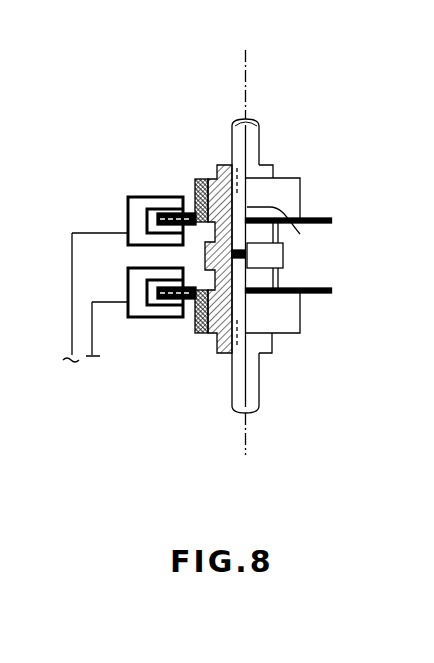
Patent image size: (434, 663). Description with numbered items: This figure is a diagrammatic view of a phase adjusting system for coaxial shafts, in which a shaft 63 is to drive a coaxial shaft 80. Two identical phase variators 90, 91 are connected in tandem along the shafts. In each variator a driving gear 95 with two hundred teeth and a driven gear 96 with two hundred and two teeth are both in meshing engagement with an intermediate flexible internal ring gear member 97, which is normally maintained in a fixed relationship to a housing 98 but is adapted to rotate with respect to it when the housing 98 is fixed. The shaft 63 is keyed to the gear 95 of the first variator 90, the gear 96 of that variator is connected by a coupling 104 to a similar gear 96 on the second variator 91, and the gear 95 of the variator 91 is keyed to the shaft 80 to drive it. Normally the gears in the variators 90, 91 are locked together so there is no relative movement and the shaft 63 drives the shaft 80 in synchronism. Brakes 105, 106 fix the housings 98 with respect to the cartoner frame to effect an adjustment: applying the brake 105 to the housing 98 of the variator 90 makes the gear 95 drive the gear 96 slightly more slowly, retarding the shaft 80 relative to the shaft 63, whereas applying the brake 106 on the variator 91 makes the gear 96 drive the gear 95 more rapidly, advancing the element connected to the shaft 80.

The shaft 63 is at (259, 131).
The shaft 80 is at (260, 407).
The phase variator 90 is at (324, 215).
The phase variator 91 is at (330, 332).
The driving gear 95 is at (222, 167).
The driven gear 96 is at (246, 290).
The flexible internal ring gear member 97 is at (193, 190).
The housing 98 is at (288, 189).
The coupling 104 is at (283, 254).
The brake 105 is at (128, 213).
The brake 106 is at (134, 280).